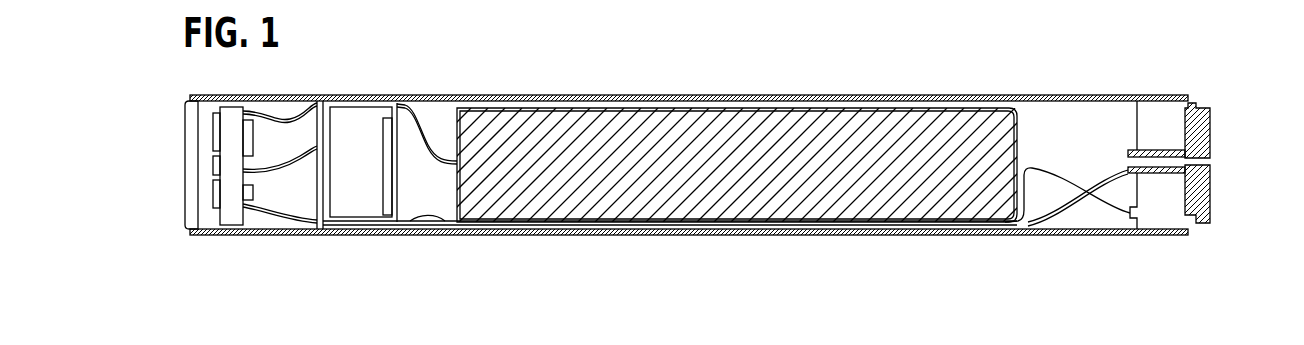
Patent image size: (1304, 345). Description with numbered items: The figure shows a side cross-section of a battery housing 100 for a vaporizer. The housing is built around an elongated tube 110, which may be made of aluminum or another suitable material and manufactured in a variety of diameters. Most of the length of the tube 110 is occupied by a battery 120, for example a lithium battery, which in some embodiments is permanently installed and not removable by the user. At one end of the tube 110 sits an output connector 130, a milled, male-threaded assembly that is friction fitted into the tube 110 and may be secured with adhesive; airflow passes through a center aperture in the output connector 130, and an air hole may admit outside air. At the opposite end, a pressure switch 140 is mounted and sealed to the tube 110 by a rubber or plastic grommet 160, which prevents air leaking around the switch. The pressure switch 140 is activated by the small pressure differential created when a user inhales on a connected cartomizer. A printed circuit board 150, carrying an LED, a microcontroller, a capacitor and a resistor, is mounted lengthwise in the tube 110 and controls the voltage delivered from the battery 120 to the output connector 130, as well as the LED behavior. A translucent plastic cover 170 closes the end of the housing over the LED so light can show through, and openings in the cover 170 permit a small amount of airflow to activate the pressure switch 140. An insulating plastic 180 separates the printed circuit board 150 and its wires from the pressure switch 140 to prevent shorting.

The battery housing 100 is at (560, 76).
The tube 110 is at (858, 95).
The battery 120 is at (762, 212).
The output connector 130 is at (1210, 195).
The pressure switch 140 is at (368, 187).
The printed circuit board 150 is at (235, 233).
The grommet 160 is at (360, 235).
The translucent plastic cover 170 is at (193, 203).
The insulating plastic 180 is at (320, 97).